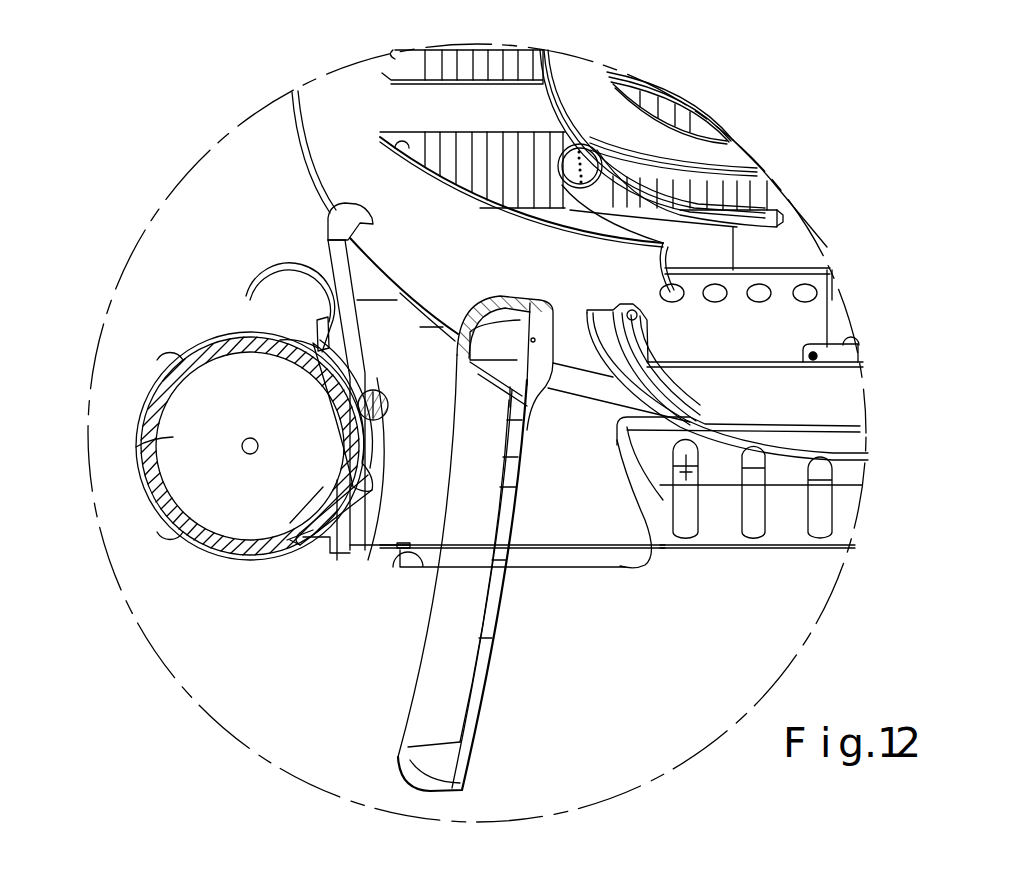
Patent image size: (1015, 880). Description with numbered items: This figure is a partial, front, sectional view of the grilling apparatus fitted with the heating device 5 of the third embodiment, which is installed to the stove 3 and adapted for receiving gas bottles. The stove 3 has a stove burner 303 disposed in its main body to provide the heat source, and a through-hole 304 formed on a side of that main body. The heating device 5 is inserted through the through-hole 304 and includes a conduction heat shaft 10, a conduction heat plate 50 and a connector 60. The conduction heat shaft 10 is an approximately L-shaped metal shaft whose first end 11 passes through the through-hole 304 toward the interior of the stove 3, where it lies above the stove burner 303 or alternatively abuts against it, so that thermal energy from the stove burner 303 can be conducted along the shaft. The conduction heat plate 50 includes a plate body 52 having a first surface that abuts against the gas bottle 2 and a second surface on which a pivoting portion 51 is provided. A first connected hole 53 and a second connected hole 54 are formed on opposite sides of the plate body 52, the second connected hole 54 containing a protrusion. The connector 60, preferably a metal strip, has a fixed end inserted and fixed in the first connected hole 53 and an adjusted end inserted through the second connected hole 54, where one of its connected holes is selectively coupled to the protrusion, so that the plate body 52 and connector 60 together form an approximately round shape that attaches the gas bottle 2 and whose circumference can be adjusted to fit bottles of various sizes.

The gas bottle 2 is at (172, 440).
The stove 3 is at (897, 375).
The heating device 5 is at (332, 668).
The conduction heat shaft 10 is at (301, 234).
The first end 11 is at (740, 217).
The conduction heat plate 50 is at (282, 640).
The pivoting portion 51 is at (366, 545).
The plate body 52 is at (315, 530).
The first connected hole 53 is at (365, 528).
The second connected hole 54 is at (323, 340).
The connector 60 is at (323, 287).
The stove burner 303 is at (590, 160).
The through-hole 304 is at (347, 207).